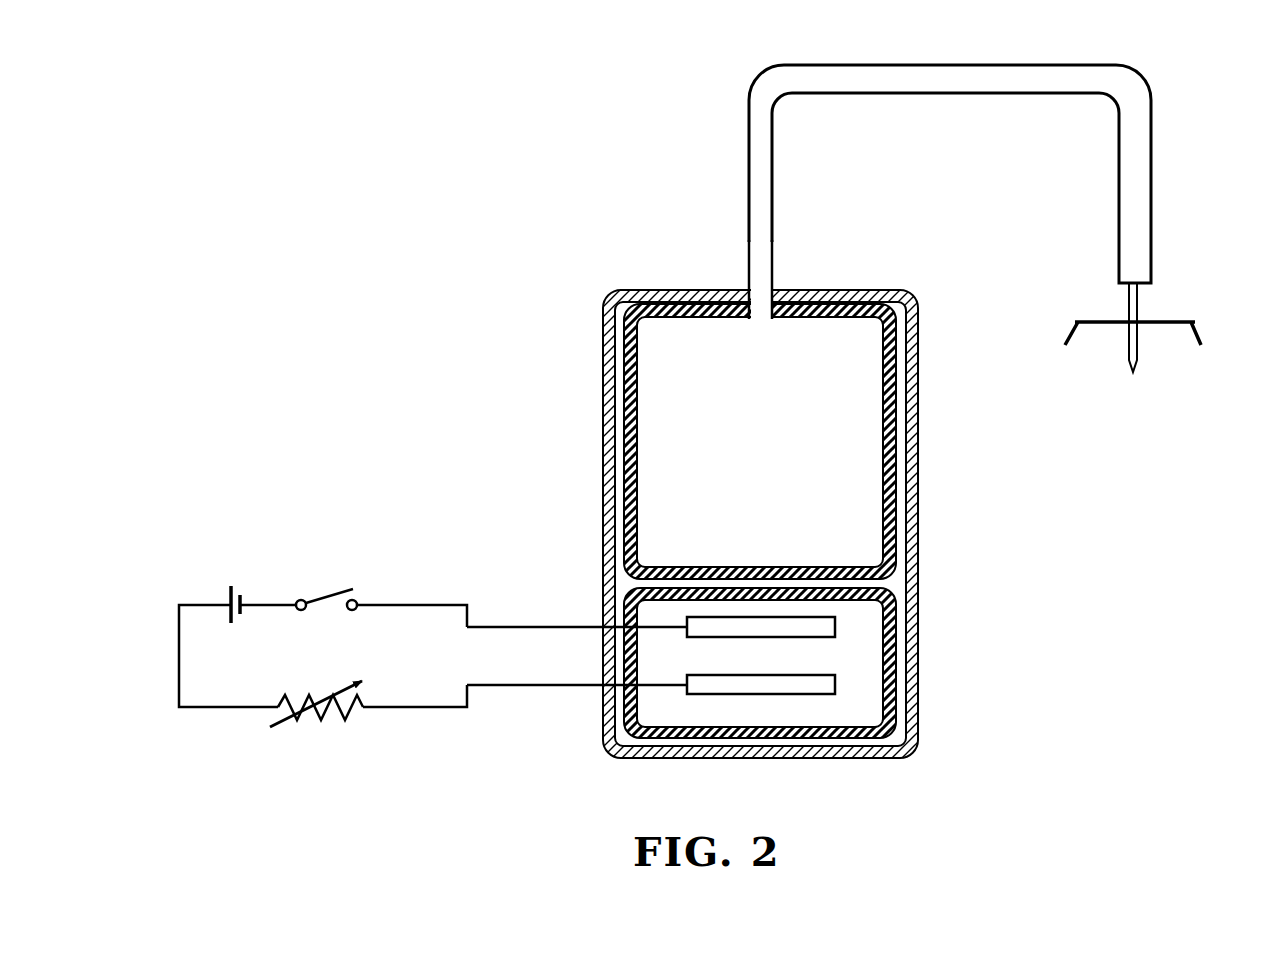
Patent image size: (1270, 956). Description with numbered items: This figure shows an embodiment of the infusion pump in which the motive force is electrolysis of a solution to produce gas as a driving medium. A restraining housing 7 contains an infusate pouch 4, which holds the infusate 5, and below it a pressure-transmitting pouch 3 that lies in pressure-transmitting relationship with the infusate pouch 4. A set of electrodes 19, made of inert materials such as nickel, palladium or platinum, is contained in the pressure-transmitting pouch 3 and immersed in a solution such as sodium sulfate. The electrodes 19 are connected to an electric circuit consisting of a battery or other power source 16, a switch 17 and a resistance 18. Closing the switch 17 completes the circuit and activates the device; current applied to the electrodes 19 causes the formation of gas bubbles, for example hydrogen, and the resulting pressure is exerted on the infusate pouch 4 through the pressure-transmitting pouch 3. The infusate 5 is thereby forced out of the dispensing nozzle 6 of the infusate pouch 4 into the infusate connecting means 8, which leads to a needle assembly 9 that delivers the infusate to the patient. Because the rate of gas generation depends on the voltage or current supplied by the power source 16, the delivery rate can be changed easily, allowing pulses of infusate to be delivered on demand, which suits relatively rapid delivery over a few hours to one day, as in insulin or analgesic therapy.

The pressure-transmitting pouch 3 is at (896, 612).
The infusate pouch 4 is at (895, 487).
The infusate 5 is at (826, 406).
The dispensing nozzle 6 is at (774, 278).
The housing 7 is at (607, 300).
The infusate connecting means 8 is at (745, 145).
The needle assembly 9 is at (1161, 297).
The power source 16 is at (227, 585).
The switch 17 is at (372, 582).
The resistance 18 is at (343, 728).
The electrodes 19 is at (828, 685).